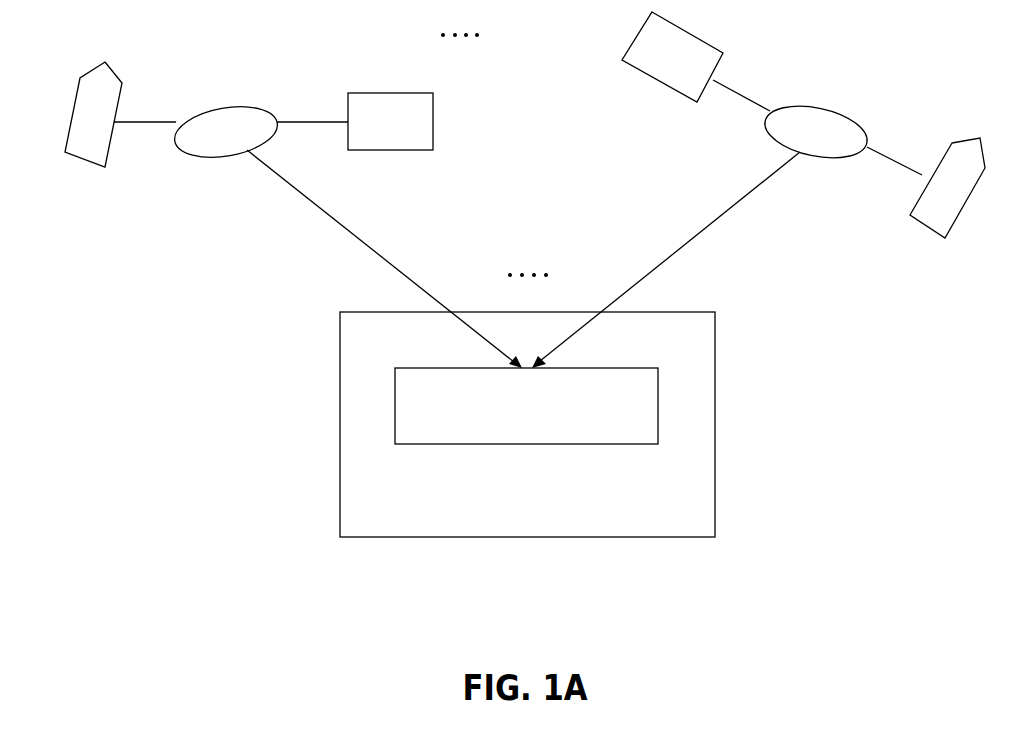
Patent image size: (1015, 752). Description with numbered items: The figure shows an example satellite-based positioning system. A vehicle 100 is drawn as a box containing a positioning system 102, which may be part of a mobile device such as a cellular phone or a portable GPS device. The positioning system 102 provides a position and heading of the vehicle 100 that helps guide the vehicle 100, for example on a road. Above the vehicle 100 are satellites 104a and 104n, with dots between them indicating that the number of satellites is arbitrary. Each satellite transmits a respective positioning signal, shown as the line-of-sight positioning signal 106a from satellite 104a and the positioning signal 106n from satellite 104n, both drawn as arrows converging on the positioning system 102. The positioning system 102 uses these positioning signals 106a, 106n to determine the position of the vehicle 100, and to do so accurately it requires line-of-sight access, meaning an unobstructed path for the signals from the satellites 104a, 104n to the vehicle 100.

The vehicle 100 is at (715, 452).
The positioning system 102 is at (617, 368).
The satellite 104a is at (229, 108).
The satellite 104n is at (834, 109).
The positioning signal 106a is at (367, 242).
The positioning signal 106n is at (673, 255).